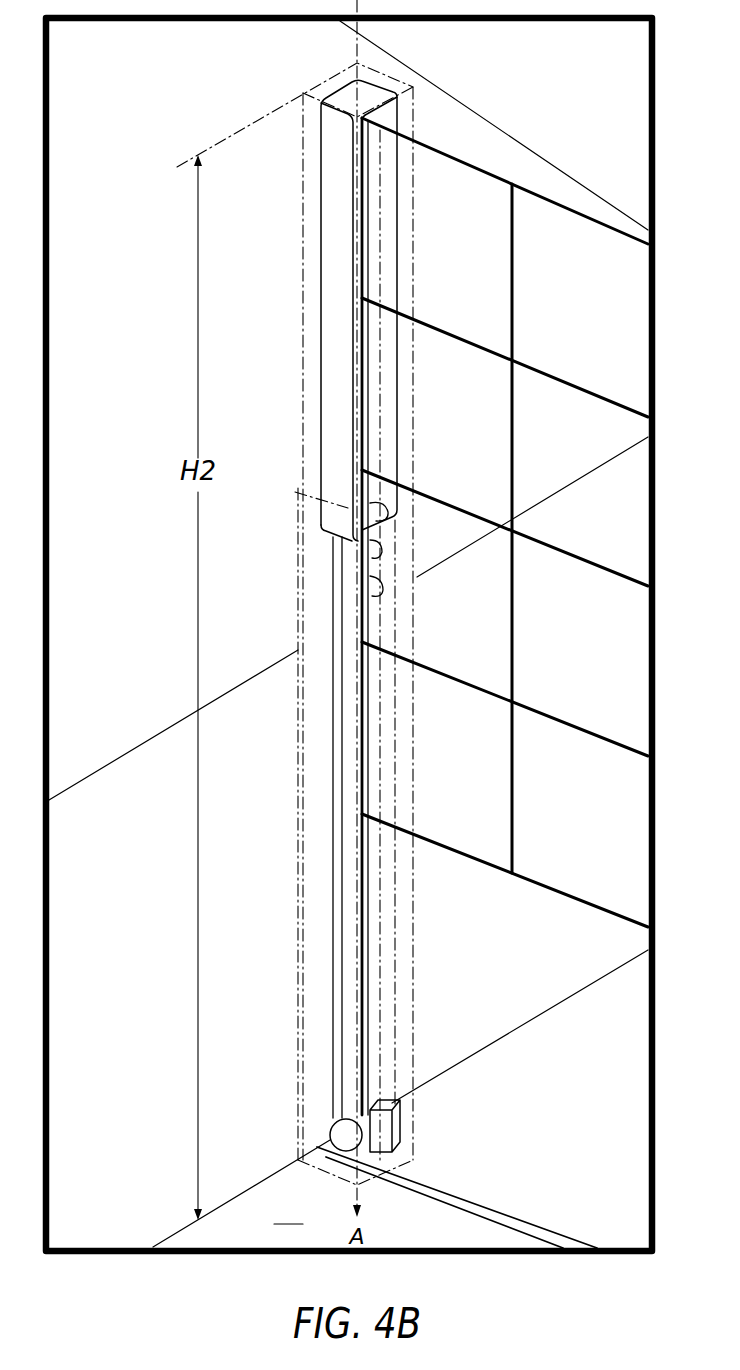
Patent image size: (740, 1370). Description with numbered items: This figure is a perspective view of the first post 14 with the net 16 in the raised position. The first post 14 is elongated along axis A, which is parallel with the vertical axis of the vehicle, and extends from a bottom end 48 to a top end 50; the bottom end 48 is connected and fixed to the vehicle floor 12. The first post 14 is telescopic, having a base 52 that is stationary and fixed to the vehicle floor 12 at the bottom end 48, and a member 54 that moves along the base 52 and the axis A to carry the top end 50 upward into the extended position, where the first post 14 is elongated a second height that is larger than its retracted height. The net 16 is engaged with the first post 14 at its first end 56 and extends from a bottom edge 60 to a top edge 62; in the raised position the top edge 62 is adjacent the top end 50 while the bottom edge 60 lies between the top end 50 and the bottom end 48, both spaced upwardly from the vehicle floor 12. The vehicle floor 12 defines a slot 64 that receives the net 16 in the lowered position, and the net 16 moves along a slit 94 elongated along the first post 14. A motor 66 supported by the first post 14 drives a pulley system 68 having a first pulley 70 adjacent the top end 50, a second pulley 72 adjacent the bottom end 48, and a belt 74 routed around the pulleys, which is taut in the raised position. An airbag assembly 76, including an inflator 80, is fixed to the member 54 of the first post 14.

The vehicle floor 12 is at (287, 1210).
The first post 14 is at (290, 542).
The net 16 is at (496, 882).
The bottom end 48 is at (445, 1157).
The top end 50 is at (330, 84).
The base 52 is at (300, 770).
The member 54 is at (301, 247).
The first end 56 is at (420, 244).
The bottom edge 60 is at (542, 890).
The top edge 62 is at (548, 200).
The slot 64 is at (530, 1225).
The motor 66 is at (395, 1120).
The pulley system 68 is at (312, 974).
The first pulley 70 is at (372, 119).
The second pulley 72 is at (330, 1133).
The belt 74 is at (333, 915).
The airbag assembly 76 is at (404, 289).
The inflator 80 is at (377, 578).
The slit 94 is at (378, 394).